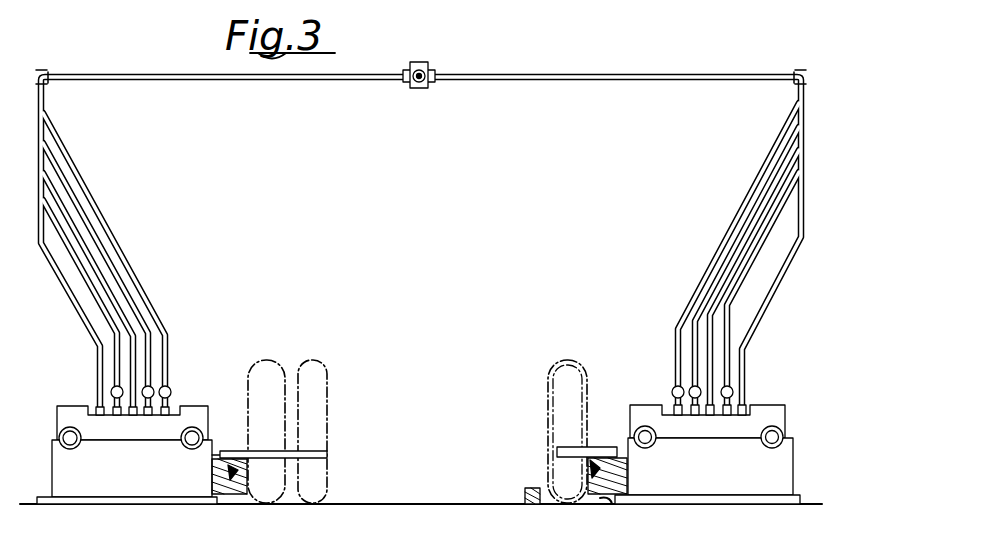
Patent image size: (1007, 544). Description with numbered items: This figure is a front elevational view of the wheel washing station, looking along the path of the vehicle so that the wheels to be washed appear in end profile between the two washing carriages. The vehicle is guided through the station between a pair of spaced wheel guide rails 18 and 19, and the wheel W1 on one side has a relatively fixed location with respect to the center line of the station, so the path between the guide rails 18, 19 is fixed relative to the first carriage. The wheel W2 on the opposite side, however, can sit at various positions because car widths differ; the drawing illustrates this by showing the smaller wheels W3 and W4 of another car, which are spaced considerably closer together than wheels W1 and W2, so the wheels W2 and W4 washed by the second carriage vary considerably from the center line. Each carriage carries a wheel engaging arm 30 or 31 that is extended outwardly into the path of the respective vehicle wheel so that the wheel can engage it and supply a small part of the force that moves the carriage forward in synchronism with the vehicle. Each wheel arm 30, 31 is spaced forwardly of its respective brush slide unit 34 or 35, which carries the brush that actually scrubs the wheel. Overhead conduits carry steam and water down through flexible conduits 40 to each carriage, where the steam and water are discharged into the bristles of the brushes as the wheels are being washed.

The flexible conduits 40 is at (119, 228).
The brush slide unit 35 is at (233, 464).
The wheel engaging arm 31 is at (313, 448).
The wheel engaging arm 30 is at (565, 449).
The brush slide unit 34 is at (594, 462).
The wheel guide rail 19 is at (527, 489).
The wheel guide rail 18 is at (607, 503).
The wheel W1 is at (554, 364).
The wheel W2 is at (266, 359).
The wheel W3 is at (562, 379).
The wheel W4 is at (306, 360).